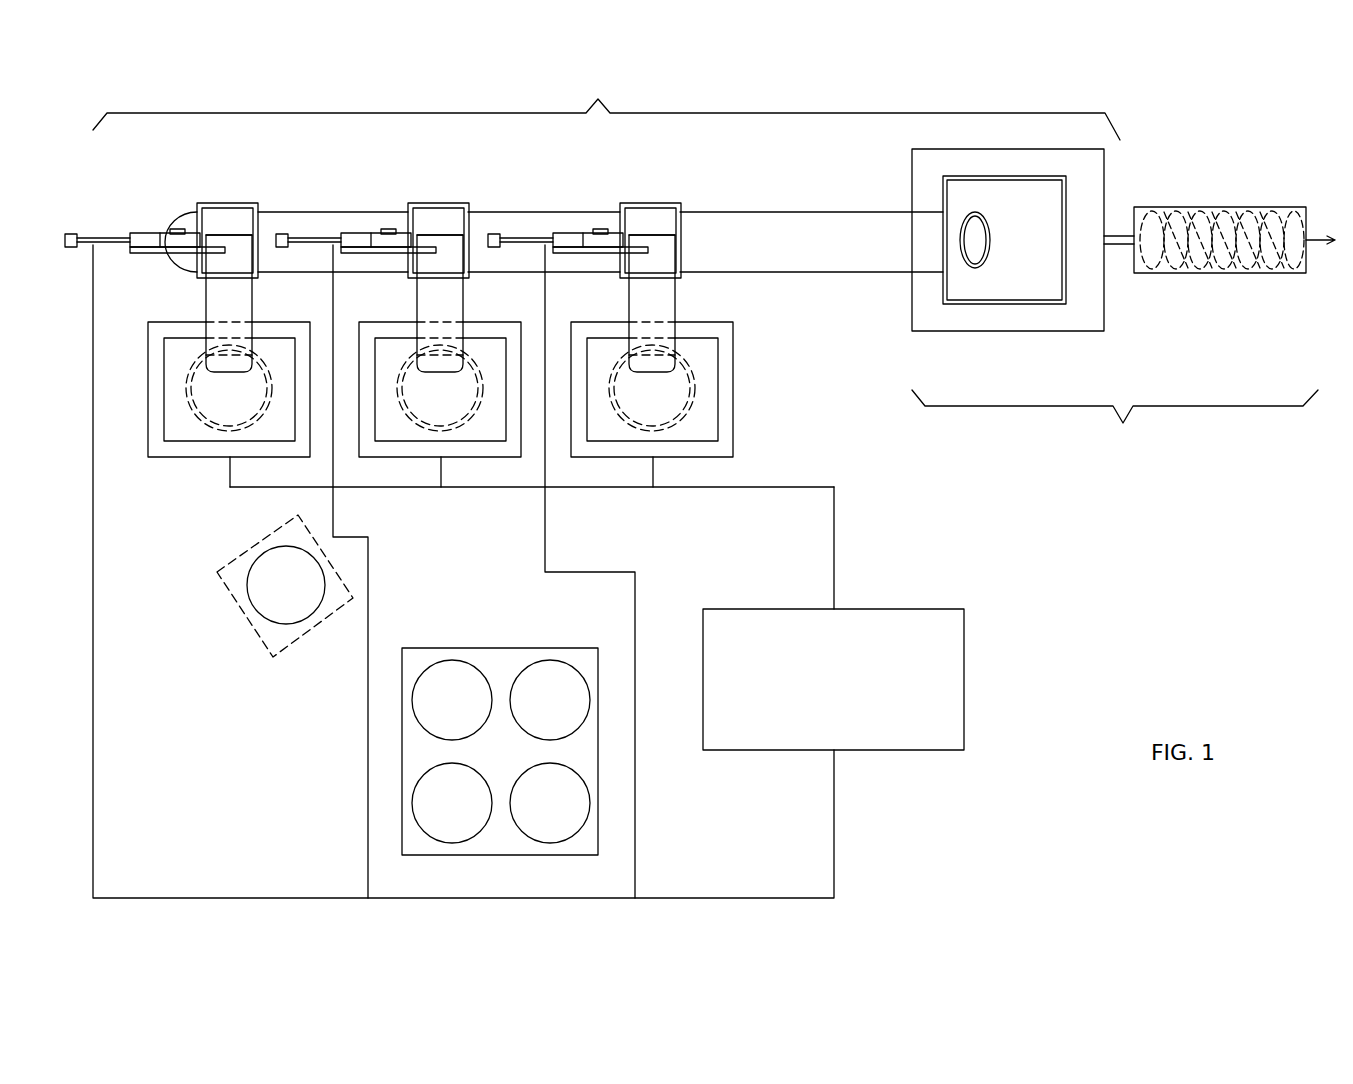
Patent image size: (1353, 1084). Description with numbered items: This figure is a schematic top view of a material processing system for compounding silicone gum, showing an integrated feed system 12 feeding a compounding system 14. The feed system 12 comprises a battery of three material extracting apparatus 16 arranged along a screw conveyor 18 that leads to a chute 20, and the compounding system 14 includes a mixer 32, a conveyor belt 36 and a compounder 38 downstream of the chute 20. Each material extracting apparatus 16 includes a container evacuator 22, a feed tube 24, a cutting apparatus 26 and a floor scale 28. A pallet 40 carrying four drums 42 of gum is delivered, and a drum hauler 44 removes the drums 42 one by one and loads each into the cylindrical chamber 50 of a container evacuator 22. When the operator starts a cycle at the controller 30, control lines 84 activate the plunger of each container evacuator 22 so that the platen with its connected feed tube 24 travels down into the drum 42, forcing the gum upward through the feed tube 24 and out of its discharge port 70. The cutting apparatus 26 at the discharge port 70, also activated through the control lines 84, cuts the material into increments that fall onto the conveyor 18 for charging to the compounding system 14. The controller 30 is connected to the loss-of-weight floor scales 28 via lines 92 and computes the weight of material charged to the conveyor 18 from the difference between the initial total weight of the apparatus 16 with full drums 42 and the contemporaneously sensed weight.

The feed system 12 is at (606, 104).
The compounding system 14 is at (1115, 421).
The material extracting apparatus 16 is at (135, 314).
The conveyor 18 is at (772, 212).
The chute 20 is at (948, 185).
The container evacuator 22 is at (182, 441).
The feed tube 24 is at (262, 300).
The cutting apparatus 26 is at (135, 233).
The floor scale 28 is at (148, 395).
The controller 30 is at (964, 656).
The mixer 32 is at (980, 331).
The conveyor belt 36 is at (1118, 232).
The compounder 38 is at (1220, 207).
The pallet 40 is at (402, 728).
The drum 42 is at (222, 443).
The drum hauler 44 is at (280, 656).
The cylindrical chamber 50 is at (208, 340).
The discharge port 70 is at (230, 233).
The control lines 84 is at (92, 400).
The lines 92 is at (834, 512).